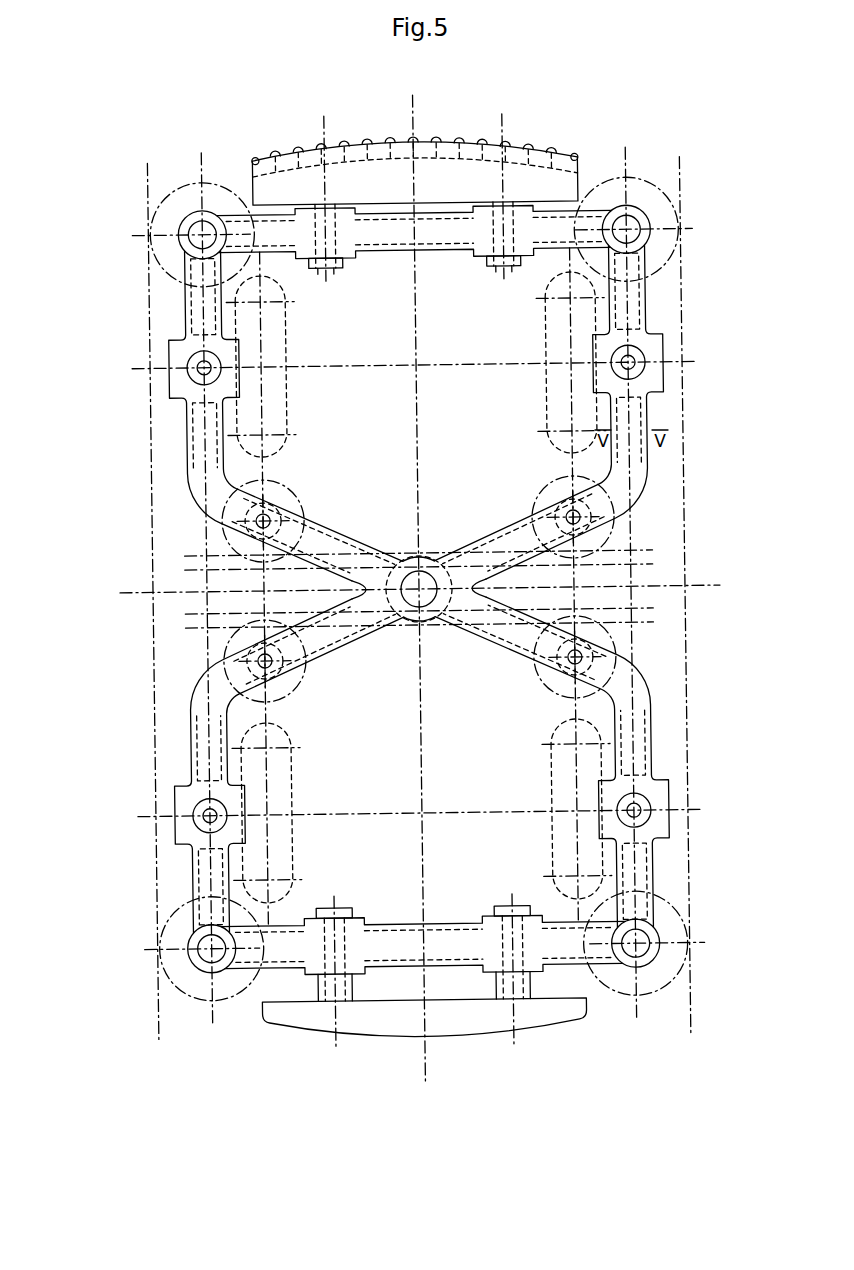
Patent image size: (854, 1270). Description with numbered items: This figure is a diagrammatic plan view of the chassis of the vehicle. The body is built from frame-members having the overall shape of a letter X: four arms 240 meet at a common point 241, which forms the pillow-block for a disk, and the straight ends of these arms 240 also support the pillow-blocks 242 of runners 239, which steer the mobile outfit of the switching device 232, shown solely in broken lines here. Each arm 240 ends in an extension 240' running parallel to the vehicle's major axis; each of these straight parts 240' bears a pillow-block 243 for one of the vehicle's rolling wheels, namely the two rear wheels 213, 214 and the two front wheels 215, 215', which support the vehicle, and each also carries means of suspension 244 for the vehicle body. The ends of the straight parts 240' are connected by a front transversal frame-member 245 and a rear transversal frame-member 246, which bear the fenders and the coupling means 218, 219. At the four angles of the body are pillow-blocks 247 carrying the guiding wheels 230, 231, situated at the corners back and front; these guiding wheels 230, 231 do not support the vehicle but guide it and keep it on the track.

The rear wheel 213 is at (185, 319).
The rear wheel 214 is at (599, 310).
The front wheel 215 is at (240, 765).
The front wheel 215' is at (594, 762).
The coupling means 218 is at (387, 1015).
The coupling means 219 is at (375, 153).
The guiding wheel 230 is at (603, 173).
The guiding wheel 231 is at (619, 994).
The switching device 232 is at (600, 579).
The runner 239 is at (713, 694).
The arm 240 is at (419, 588).
The extension 240' is at (411, 589).
The common point 241 is at (360, 586).
The pillow-block 242 is at (713, 651).
The pillow-block 243 is at (176, 386).
The means of suspension 244 is at (655, 362).
The front transversal frame-member 245 is at (463, 948).
The rear transversal frame-member 246 is at (449, 250).
The pillow-block 247 is at (713, 943).